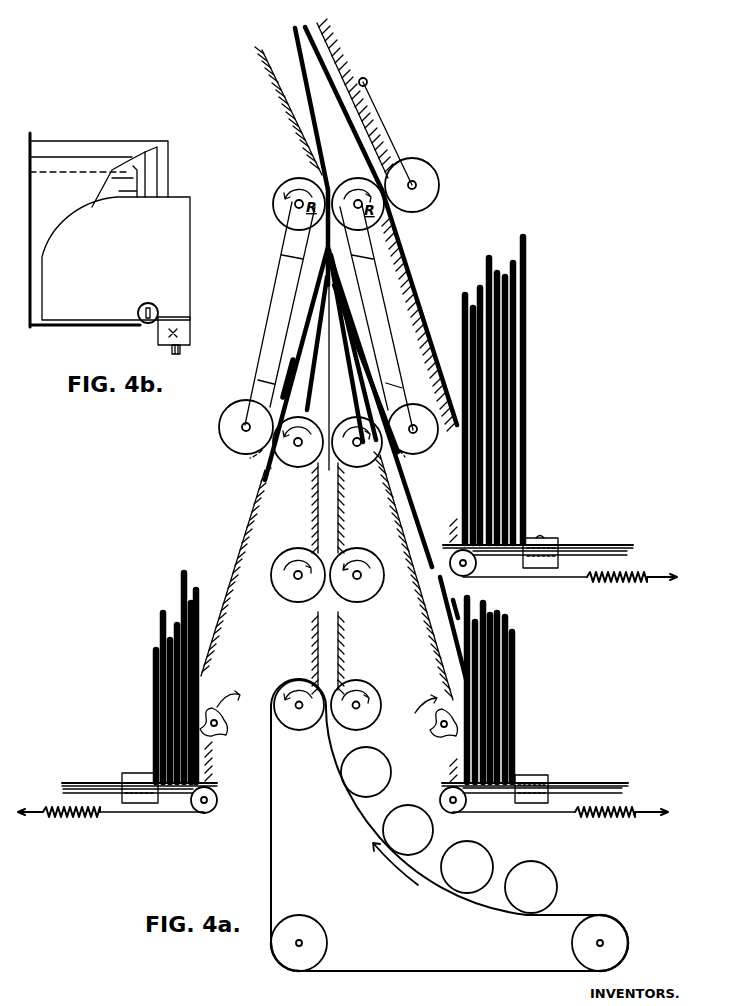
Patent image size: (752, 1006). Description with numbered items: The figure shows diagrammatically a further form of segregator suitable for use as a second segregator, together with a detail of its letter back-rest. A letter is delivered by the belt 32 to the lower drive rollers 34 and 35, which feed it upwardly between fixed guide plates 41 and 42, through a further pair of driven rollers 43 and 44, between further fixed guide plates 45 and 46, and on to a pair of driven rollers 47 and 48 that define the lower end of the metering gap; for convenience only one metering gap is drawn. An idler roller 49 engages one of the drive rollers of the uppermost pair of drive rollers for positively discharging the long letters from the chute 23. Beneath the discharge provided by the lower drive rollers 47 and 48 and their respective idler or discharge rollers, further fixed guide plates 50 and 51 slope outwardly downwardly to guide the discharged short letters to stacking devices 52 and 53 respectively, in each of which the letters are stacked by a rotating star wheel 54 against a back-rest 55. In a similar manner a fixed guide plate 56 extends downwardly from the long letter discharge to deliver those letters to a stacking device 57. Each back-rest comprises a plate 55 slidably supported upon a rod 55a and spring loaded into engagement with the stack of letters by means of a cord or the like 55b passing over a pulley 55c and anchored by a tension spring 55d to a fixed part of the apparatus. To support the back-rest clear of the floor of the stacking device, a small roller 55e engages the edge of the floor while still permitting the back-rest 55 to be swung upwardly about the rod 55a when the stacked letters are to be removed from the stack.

In FIG. 4A, the chute 23 is at (338, 70).
In FIG. 4A, the belt 32 is at (578, 910).
In FIG. 4A, the lower drive roller 34 is at (296, 730).
In FIG. 4A, the lower drive roller 35 is at (376, 688).
In FIG. 4A, the fixed guide plate 41 is at (317, 638).
In FIG. 4A, the fixed guide plate 42 is at (343, 653).
In FIG. 4A, the driven roller 43 is at (285, 557).
In FIG. 4A, the driven roller 44 is at (368, 558).
In FIG. 4A, the fixed guide plate 45 is at (316, 498).
In FIG. 4A, the fixed guide plate 46 is at (343, 513).
In FIG. 4A, the driven roller 47 is at (264, 476).
In FIG. 4A, the driven roller 48 is at (373, 461).
In FIG. 4A, the idler roller 49 is at (430, 176).
In FIG. 4A, the fixed guide plate 50 is at (244, 546).
In FIG. 4A, the fixed guide plate 51 is at (433, 593).
In FIG. 4A, the stacking device 52 is at (108, 782).
In FIG. 4A, the stacking device 53 is at (592, 782).
In FIG. 4A, the star wheel 54 is at (443, 738).
In FIG. 4A, the back-rest plate 55 is at (528, 400).
In FIG. 4B, the back-rest plate 55 is at (116, 236).
In FIG. 4A, the rod 55a is at (610, 552).
In FIG. 4B, the rod 55a is at (182, 332).
In FIG. 4A, the cord 55b is at (565, 578).
In FIG. 4A, the pulley 55c is at (472, 570).
In FIG. 4B, the pulley 55c is at (183, 350).
In FIG. 4A, the tension spring 55d is at (635, 578).
In FIG. 4B, the small roller 55e is at (148, 324).
In FIG. 4A, the fixed guide plate 56 is at (403, 268).
In FIG. 4A, the stacking device 57 is at (577, 543).